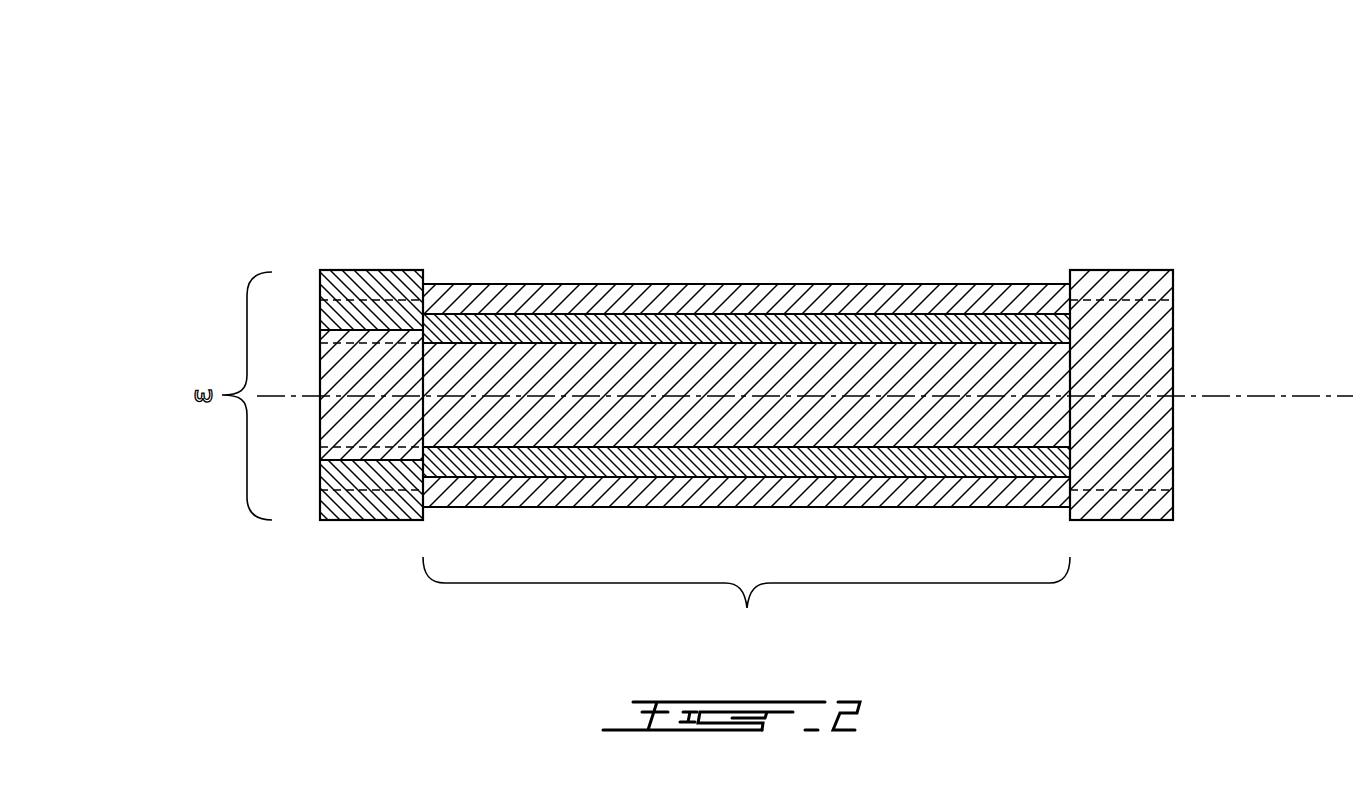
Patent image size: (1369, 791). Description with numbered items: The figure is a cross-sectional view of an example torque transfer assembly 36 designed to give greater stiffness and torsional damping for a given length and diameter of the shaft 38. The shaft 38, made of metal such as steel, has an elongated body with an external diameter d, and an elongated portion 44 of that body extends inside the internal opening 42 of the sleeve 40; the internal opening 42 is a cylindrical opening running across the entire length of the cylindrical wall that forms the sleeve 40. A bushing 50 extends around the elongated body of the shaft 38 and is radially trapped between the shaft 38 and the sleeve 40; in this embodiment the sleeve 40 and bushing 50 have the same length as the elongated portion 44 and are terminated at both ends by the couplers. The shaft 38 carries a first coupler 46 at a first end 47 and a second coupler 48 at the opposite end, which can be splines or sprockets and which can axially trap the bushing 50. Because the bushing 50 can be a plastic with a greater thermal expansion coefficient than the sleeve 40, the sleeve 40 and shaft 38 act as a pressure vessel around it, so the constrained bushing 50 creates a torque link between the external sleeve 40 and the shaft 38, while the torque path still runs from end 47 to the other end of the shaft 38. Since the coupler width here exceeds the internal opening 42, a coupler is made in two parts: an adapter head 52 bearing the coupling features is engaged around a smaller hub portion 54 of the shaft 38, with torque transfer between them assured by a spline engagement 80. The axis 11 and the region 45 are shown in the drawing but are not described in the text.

The torque transfer assembly 36 is at (1000, 212).
The shaft 38 is at (642, 368).
The sleeve 40 is at (762, 284).
The internal opening 42 is at (835, 320).
The portion of the shaft 44 is at (746, 601).
The end portion 45 is at (362, 425).
The first coupler 46 is at (1215, 262).
The first end 47 is at (1127, 460).
The second coupler 48 is at (258, 216).
The bushing 50 is at (565, 328).
The adapter head 52 is at (337, 272).
The hub portion 54 is at (370, 370).
The spline engagement 80 is at (402, 337).
The longitudinal axis 11 is at (1291, 396).
The external diameter of the shaft d is at (516, 345).